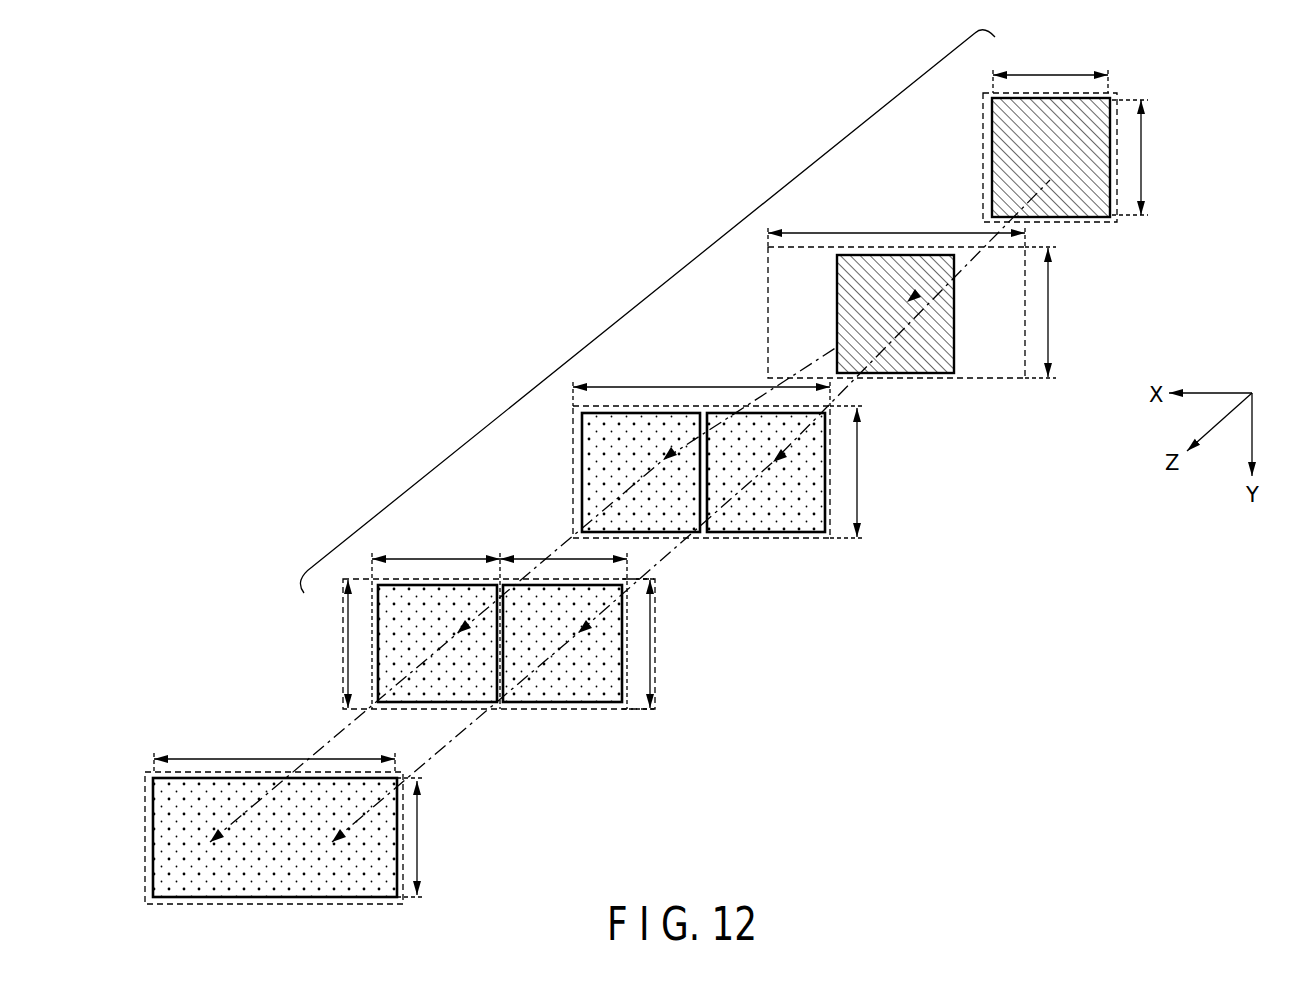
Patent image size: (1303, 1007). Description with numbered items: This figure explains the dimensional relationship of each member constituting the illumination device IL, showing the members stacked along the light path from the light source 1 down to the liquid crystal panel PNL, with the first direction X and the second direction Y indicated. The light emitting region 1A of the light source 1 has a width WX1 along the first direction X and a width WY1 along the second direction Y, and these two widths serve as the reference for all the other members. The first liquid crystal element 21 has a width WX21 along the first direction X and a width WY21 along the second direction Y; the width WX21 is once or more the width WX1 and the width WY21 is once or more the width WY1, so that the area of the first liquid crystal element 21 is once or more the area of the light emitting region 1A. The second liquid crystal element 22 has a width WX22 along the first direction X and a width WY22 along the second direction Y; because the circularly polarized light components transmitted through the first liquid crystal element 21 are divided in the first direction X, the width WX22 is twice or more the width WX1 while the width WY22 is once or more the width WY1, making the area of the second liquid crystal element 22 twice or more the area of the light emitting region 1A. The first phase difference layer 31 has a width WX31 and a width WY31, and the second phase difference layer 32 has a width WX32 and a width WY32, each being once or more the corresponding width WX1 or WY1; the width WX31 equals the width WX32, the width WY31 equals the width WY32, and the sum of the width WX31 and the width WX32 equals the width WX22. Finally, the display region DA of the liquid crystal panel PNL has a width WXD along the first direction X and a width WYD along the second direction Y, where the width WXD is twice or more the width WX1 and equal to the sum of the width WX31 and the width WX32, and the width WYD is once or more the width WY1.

The light source 1 is at (983, 185).
The light emitting region 1A is at (1004, 127).
The first liquid crystal element 21 is at (768, 293).
The second liquid crystal element 22 is at (573, 453).
The first phase difference layer 31 is at (563, 709).
The second phase difference layer 32 is at (415, 706).
The display region DA is at (248, 877).
The liquid crystal panel PNL is at (347, 904).
The illumination device IL is at (657, 294).
The width of light emitting region along first direction X WX1 is at (1050, 73).
The width of light emitting region along second direction Y WY1 is at (1143, 157).
The width of first liquid crystal element along first direction X WX21 is at (870, 232).
The width of first liquid crystal element along second direction Y WY21 is at (1056, 312).
The width of second liquid crystal element along first direction X WX22 is at (672, 386).
The width of second liquid crystal element along second direction Y WY22 is at (864, 472).
The width of first phase difference layer along first direction X WX31 is at (535, 558).
The width of second phase difference layer along first direction X WX32 is at (437, 558).
The width of first phase difference layer along second direction Y WY31 is at (656, 643).
The width of second phase difference layer along second direction Y WY32 is at (346, 643).
The width of display region along first direction X WXD is at (255, 758).
The width of display region along second direction Y WYD is at (424, 837).